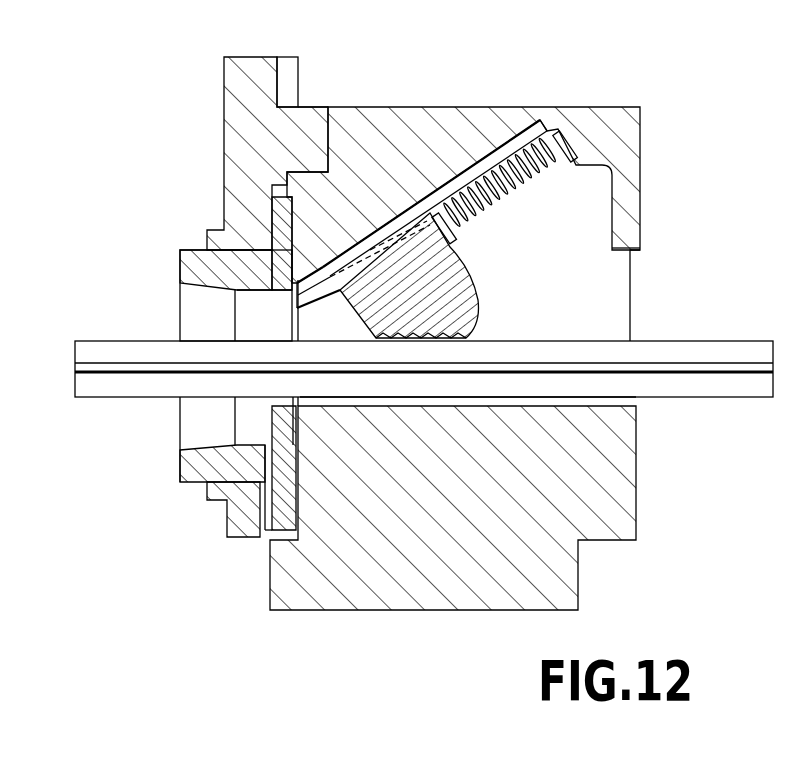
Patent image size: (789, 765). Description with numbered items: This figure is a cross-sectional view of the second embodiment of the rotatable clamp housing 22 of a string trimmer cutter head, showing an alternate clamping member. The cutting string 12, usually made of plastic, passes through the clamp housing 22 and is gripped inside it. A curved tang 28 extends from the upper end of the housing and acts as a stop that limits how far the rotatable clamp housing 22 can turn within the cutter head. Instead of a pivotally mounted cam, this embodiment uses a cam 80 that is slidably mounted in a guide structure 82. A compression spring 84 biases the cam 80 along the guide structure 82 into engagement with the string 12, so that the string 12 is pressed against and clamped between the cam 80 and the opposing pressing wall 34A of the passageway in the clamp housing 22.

The cutting string 12 is at (723, 337).
The rotatable clamp housing 22 is at (373, 107).
The curved tang 28 is at (257, 62).
The pressing wall 34A is at (572, 402).
The cam 80 is at (458, 282).
The guide structure 82 is at (470, 173).
The compression spring 84 is at (507, 200).